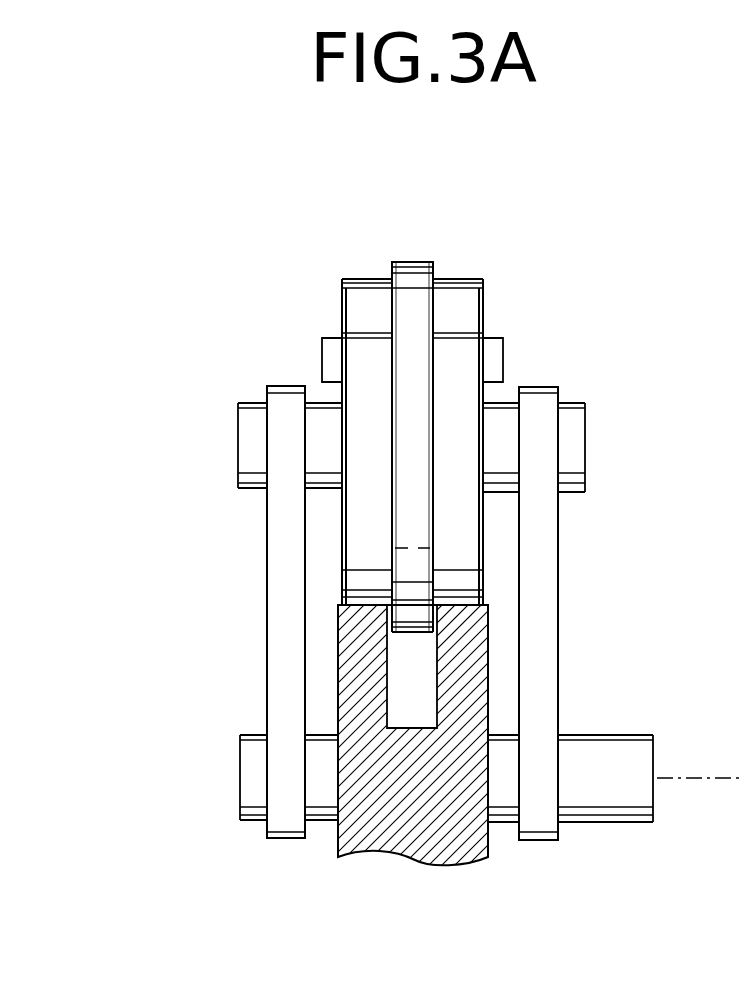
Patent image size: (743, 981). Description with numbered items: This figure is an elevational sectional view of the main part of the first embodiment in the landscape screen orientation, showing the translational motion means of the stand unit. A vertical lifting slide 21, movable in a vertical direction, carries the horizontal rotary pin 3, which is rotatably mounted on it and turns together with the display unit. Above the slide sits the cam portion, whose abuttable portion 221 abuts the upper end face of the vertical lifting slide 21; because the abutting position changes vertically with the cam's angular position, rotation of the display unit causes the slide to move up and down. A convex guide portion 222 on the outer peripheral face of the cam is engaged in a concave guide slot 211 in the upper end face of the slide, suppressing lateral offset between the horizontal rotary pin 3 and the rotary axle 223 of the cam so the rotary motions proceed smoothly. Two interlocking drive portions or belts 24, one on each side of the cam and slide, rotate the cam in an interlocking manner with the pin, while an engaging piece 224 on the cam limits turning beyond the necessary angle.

The vertical lifting slide 21 is at (410, 827).
The concave guide slot 211 is at (400, 683).
The abuttable portion 221 is at (463, 280).
The convex guide portion 222 is at (408, 272).
The rotary axle 223 is at (247, 447).
The engaging piece 224 is at (332, 348).
The interlocking drive portion 24 is at (273, 590).
The horizontal rotary pin 3 is at (250, 783).